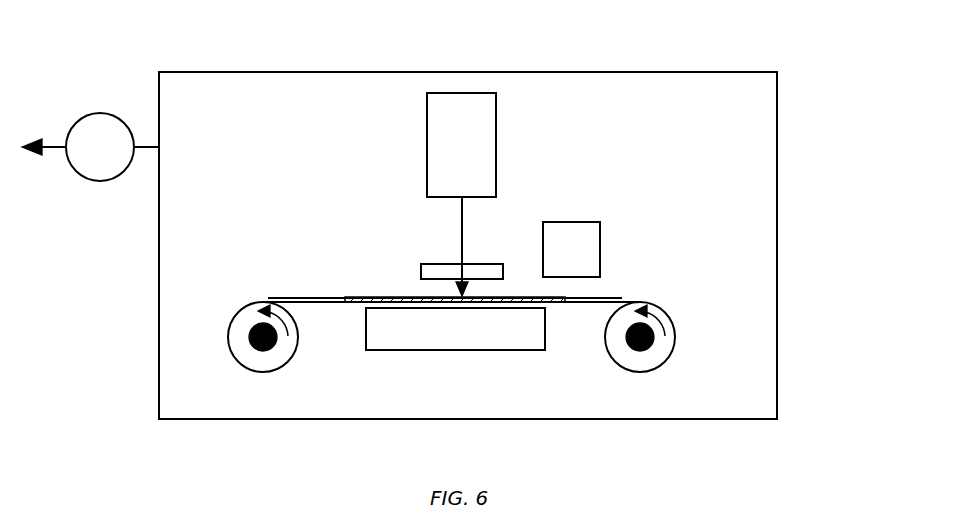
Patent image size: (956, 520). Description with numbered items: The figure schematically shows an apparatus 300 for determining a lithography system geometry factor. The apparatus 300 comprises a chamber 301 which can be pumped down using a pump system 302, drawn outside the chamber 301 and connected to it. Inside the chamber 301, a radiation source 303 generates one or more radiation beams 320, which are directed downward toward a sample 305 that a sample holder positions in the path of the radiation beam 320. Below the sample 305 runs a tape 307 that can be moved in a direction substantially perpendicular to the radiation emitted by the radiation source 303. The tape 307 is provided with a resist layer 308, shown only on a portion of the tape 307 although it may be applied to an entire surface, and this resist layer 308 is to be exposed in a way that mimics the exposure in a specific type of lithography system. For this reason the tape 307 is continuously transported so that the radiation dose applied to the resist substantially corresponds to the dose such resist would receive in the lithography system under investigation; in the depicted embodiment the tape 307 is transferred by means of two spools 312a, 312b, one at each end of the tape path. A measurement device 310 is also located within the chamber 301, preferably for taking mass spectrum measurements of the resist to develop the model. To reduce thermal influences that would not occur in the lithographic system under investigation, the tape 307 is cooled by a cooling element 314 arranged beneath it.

The apparatus 300 is at (522, 64).
The chamber 301 is at (778, 182).
The pump system 302 is at (100, 113).
The radiation source 303 is at (496, 140).
The sample 305 is at (480, 262).
The tape 307 is at (610, 298).
The resist layer 308 is at (372, 297).
The measurement device 310 is at (600, 248).
The spool 312a is at (676, 336).
The spool 312b is at (251, 305).
The cooling element 314 is at (465, 350).
The radiation beam 320 is at (460, 224).